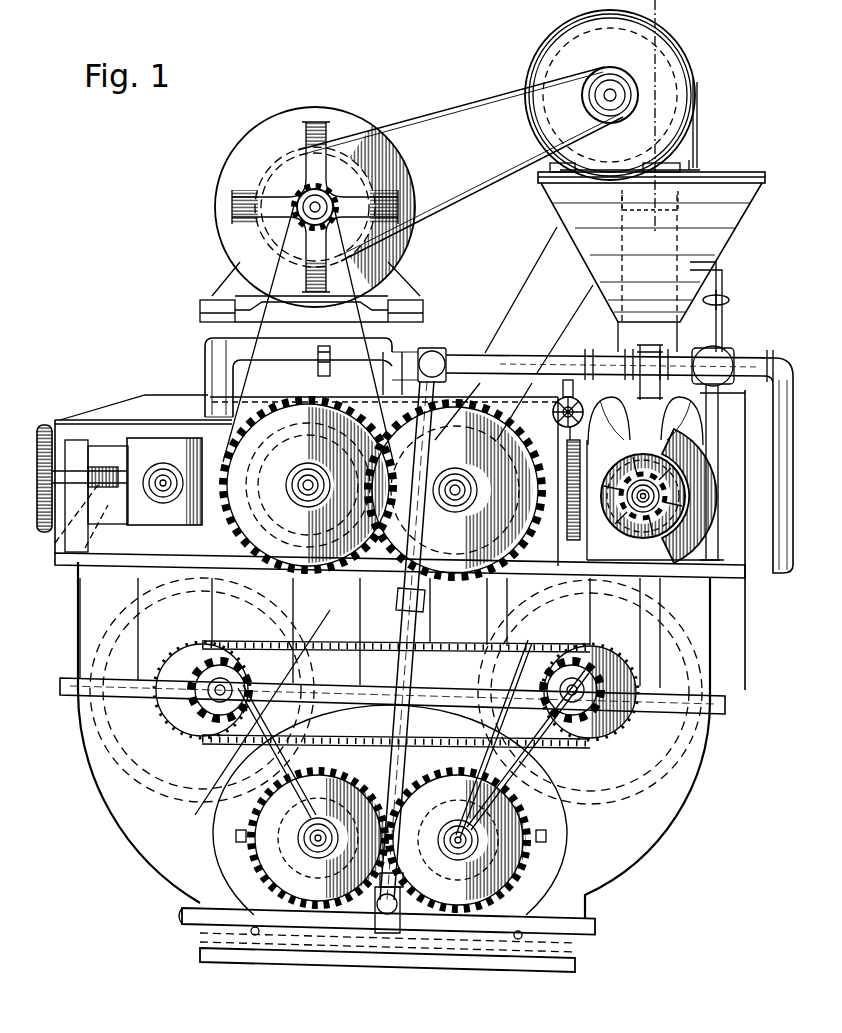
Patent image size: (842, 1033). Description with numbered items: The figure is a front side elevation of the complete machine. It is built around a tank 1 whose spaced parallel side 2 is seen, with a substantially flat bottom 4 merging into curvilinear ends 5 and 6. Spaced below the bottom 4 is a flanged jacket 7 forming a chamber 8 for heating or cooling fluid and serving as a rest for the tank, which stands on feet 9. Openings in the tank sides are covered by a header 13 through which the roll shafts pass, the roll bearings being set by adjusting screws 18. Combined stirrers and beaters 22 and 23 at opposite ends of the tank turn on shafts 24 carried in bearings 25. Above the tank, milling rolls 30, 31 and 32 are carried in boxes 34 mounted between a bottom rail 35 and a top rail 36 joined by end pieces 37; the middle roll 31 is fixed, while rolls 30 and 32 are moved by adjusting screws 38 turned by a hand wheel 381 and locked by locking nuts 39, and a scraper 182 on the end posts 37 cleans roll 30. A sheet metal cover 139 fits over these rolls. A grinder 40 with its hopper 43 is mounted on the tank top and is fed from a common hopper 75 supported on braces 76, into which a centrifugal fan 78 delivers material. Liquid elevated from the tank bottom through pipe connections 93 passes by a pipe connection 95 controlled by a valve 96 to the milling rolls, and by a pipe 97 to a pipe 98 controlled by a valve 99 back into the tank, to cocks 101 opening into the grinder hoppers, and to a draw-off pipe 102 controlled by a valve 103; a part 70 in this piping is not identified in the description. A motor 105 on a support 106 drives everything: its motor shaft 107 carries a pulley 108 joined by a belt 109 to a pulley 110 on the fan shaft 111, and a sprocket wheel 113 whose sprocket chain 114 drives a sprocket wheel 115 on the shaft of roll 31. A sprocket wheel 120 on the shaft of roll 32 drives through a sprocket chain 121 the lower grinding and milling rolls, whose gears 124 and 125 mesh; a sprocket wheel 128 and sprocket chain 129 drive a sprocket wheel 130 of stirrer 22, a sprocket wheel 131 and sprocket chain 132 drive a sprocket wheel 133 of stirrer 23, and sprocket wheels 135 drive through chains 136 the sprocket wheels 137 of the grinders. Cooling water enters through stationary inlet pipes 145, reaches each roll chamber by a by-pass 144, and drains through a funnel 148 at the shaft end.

The tank 1 is at (712, 659).
The side of tank 2 is at (368, 810).
The bottom of tank 4 is at (200, 899).
The curvilinear end 5 is at (319, 108).
The curvilinear end 6 is at (605, 998).
The flanged jacket 7 is at (577, 943).
The chamber 8 is at (372, 960).
The feet 9 is at (488, 967).
The header 13 is at (243, 813).
The adjusting screws 18 is at (238, 840).
The combined stirrer and beater 22 is at (112, 595).
The combined stirrer and beater 23 is at (680, 603).
The shaft 24 is at (168, 700).
The bearings 25 is at (180, 735).
The milling roll 30 is at (108, 485).
The milling roll 31 is at (262, 586).
The milling roll 32 is at (472, 588).
The boxes 34 is at (140, 523).
The bottom rail 35 is at (90, 563).
The top rail 36 is at (82, 432).
The end pieces 37 is at (86, 474).
The adjusting screws 38 is at (589, 486).
The hand wheel 381 is at (44, 485).
The locking nuts 39 is at (101, 472).
The grinder 40 is at (738, 422).
The hopper 43 is at (700, 407).
The pipe with valve 70 is at (719, 284).
The hopper 75 is at (613, 192).
The uprights or braces 76 is at (514, 333).
The centrifugal fan 78 is at (550, 39).
The pipe connections 93 is at (398, 720).
The pipe connection 95 is at (382, 389).
The valve 96 is at (340, 367).
The pipe 97 is at (540, 316).
The pipe 98 is at (538, 378).
The valve 99 is at (554, 412).
The cocks 101 is at (612, 410).
The draw-off pipe 102 is at (784, 473).
The valve 103 is at (724, 355).
The motor 105 is at (270, 120).
The support 106 is at (222, 354).
The motor shaft 107 is at (298, 221).
The pulley 108 is at (272, 164).
The belt 109 is at (459, 105).
The pulley 110 is at (586, 103).
The shaft 111 is at (607, 66).
The sprocket wheel 113 is at (395, 160).
The sprocket chain 114 is at (262, 326).
The sprocket wheel 115 is at (292, 398).
The sprocket wheel 120 is at (462, 402).
The sprocket chain 121 is at (421, 716).
The gear 124 is at (270, 883).
The gear 125 is at (510, 890).
The sprocket wheel 128 is at (273, 857).
The sprocket chain 129 is at (270, 737).
The sprocket wheel 130 is at (242, 690).
The sprocket wheel 131 is at (188, 643).
The sprocket chain 132 is at (352, 605).
The sprocket wheel 133 is at (637, 722).
The sprocket wheels 135 is at (563, 859).
The chains 136 is at (712, 616).
The sprocket wheels 137 is at (702, 526).
The sheet metal cover 139 is at (163, 398).
The by-pass 144 is at (510, 437).
The inlet pipes 145 is at (163, 470).
The funnel 148 is at (168, 503).
The scraper 182 is at (70, 523).